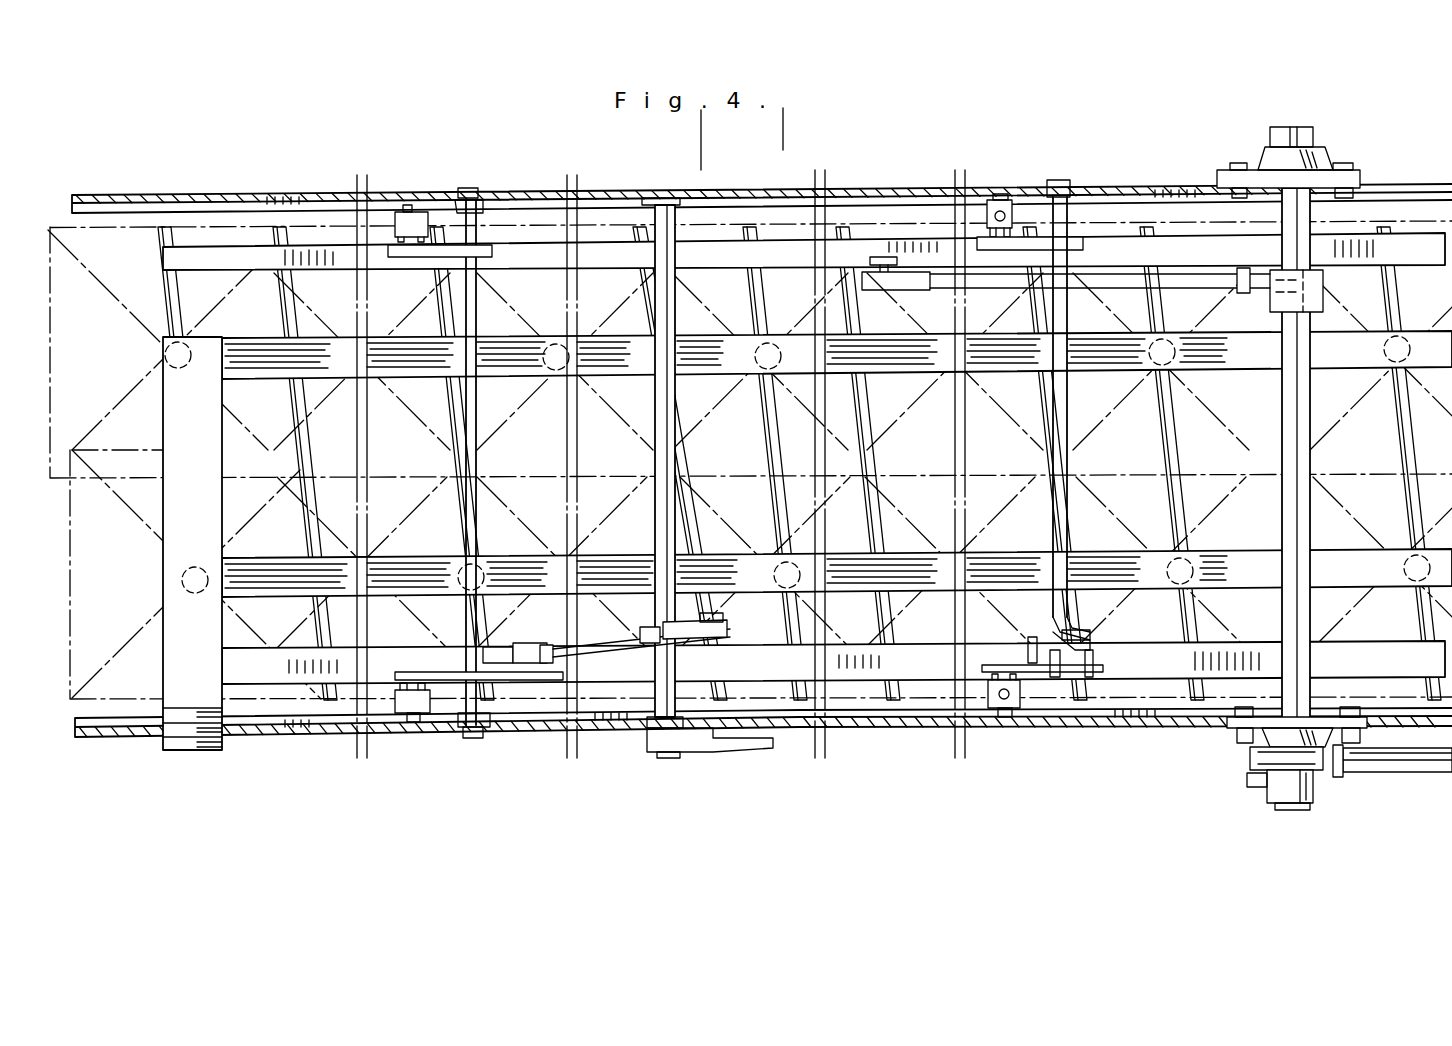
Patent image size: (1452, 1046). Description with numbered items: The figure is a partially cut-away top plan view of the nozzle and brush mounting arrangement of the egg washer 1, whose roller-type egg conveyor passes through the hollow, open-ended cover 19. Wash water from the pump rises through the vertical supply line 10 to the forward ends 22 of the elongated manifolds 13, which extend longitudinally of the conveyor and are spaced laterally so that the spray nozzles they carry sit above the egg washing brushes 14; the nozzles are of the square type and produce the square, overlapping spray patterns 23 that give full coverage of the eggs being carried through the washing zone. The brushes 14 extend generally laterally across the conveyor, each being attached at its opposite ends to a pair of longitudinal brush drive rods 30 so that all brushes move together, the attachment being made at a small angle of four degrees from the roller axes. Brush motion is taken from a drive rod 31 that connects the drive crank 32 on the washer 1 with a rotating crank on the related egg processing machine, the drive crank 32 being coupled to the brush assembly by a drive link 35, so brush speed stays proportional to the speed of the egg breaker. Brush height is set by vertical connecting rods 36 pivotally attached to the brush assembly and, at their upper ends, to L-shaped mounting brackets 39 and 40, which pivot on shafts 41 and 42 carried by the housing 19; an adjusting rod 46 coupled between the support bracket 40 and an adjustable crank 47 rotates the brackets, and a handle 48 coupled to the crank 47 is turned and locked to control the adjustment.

The washer 1 is at (1165, 178).
The supply line 10 is at (192, 543).
The manifolds 13 is at (1003, 365).
The egg washing brushes 14 is at (450, 397).
The cover 19 is at (778, 194).
The forward ends 22 is at (265, 575).
The spray patterns 23 is at (1092, 416).
The brush drive rods 30 is at (232, 247).
The drive rod 31 is at (1387, 765).
The drive crank 32 is at (1316, 274).
The drive link 35 is at (1210, 280).
The vertical connecting rods 36 is at (418, 218).
The L-shaped mounting bracket 39 is at (1075, 238).
The L-shaped mounting bracket 40 is at (535, 682).
The shaft 41 is at (1070, 493).
The shaft 42 is at (480, 533).
The adjusting rod 46 is at (620, 632).
The adjustable crank 47 is at (727, 637).
The handle 48 is at (737, 742).